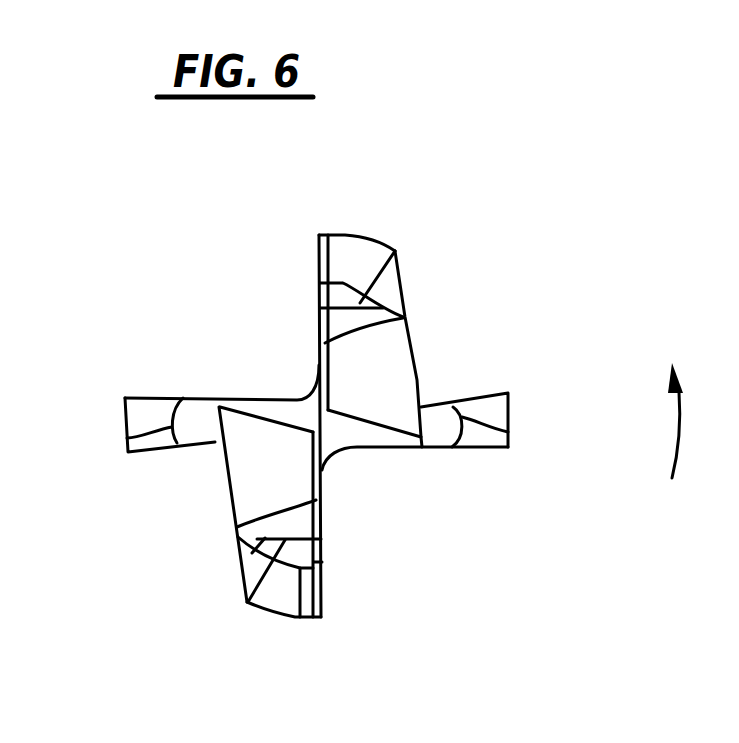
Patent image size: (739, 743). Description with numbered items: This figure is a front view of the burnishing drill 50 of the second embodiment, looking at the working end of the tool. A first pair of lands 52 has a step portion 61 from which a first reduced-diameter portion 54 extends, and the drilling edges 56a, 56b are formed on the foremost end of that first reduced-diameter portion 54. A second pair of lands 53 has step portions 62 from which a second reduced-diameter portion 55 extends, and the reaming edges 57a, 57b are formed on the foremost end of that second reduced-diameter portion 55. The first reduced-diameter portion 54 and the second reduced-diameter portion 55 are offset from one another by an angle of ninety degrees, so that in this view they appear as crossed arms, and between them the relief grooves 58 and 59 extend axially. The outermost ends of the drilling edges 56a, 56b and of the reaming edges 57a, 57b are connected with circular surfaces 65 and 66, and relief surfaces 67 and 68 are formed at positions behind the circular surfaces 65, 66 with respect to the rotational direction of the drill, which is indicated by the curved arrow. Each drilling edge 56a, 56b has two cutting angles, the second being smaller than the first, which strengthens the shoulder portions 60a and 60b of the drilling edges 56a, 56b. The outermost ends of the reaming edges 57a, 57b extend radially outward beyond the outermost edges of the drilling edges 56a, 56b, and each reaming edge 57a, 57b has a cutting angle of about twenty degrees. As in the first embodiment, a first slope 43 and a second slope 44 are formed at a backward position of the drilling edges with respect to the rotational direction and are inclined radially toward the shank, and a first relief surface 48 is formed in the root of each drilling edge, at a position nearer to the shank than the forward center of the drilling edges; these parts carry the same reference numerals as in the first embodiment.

The first slope 43 is at (417, 311).
The second slope 44 is at (390, 352).
The first relief surface 48 is at (297, 397).
The burnishing drill 50 is at (256, 385).
The first pair of lands 52 is at (380, 235).
The second pair of lands 53 is at (120, 402).
The first reduced-diameter portion 54 is at (397, 251).
The second reduced-diameter portion 55 is at (178, 403).
The drilling edge 56a is at (317, 340).
The drilling edge 56b is at (322, 527).
The reaming edge 57a is at (443, 404).
The reaming edge 57b is at (185, 443).
The relief groove 58 is at (417, 375).
The relief groove 59 is at (300, 387).
The shoulder portion 60a is at (323, 234).
The shoulder portion 60b is at (322, 562).
The step portion 61 is at (360, 248).
The step portion 62 is at (137, 415).
The circular surface 65 is at (342, 283).
The circular surface 66 is at (127, 438).
The relief surface 67 is at (392, 243).
The relief surface 68 is at (153, 398).